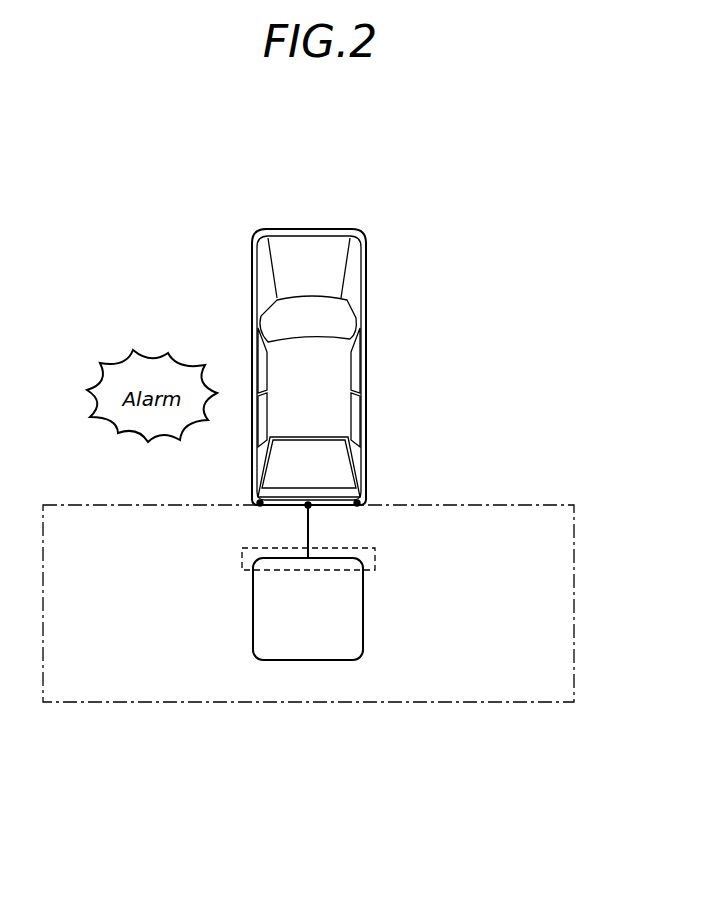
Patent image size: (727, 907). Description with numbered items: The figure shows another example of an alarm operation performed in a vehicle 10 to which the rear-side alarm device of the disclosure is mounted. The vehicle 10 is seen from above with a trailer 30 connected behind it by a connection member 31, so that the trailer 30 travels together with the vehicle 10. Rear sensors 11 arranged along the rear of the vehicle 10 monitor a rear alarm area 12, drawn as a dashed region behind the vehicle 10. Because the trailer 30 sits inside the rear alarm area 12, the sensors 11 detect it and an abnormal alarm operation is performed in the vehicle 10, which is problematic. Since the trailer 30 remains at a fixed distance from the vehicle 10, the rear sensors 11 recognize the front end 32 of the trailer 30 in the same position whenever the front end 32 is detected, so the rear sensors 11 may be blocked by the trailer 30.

The vehicle 10 is at (366, 305).
The sensors 11 is at (357, 502).
The rear alarm area 12 is at (450, 703).
The trailer 30 is at (307, 662).
The connection member 31 is at (312, 532).
The front end 32 is at (375, 550).